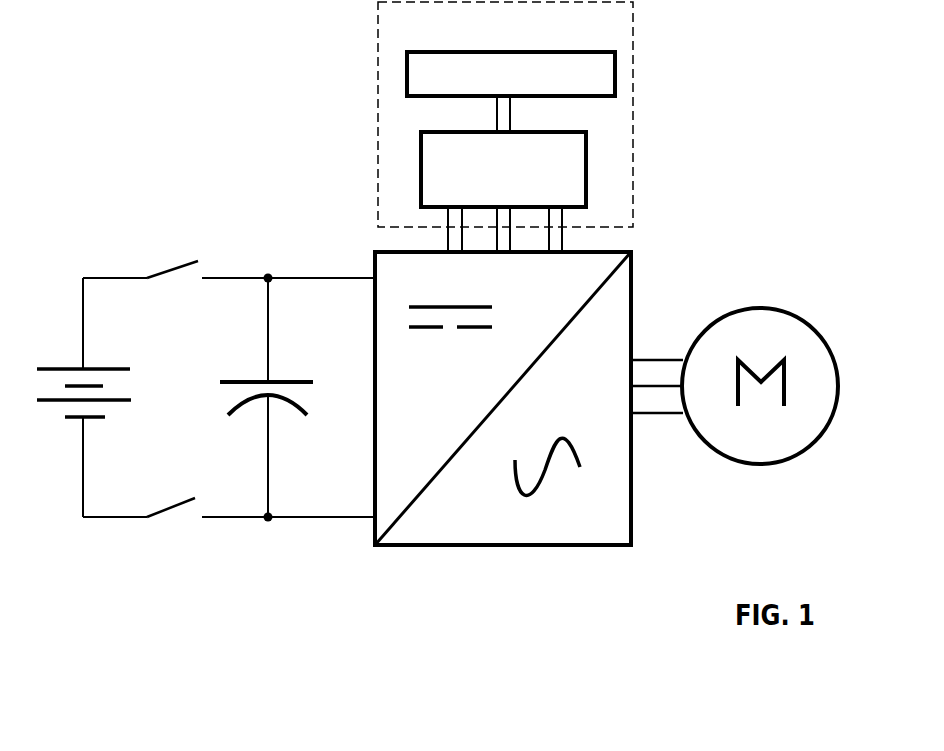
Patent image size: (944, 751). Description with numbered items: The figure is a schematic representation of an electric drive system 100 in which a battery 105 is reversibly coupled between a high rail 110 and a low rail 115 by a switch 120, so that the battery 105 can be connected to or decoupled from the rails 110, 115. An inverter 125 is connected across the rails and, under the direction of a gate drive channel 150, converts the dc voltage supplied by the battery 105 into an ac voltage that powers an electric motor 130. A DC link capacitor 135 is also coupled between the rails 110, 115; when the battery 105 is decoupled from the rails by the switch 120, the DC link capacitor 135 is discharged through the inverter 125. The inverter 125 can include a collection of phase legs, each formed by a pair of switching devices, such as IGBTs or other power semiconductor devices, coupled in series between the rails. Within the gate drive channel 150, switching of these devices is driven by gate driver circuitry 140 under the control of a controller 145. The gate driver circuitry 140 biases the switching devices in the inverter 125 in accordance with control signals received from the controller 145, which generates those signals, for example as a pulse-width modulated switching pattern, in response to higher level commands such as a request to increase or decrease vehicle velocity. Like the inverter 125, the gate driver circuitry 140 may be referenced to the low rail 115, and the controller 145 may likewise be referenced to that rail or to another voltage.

The electric drive system 100 is at (731, 106).
The battery 105 is at (117, 367).
The high rail 110 is at (308, 277).
The low rail 115 is at (243, 518).
The switch 120 is at (173, 270).
The inverter 125 is at (633, 282).
The electric motor 130 is at (818, 330).
The DC link capacitor 135 is at (283, 380).
The gate driver circuitry 140 is at (588, 168).
The controller 145 is at (617, 72).
The gate drive channel 150 is at (377, 80).